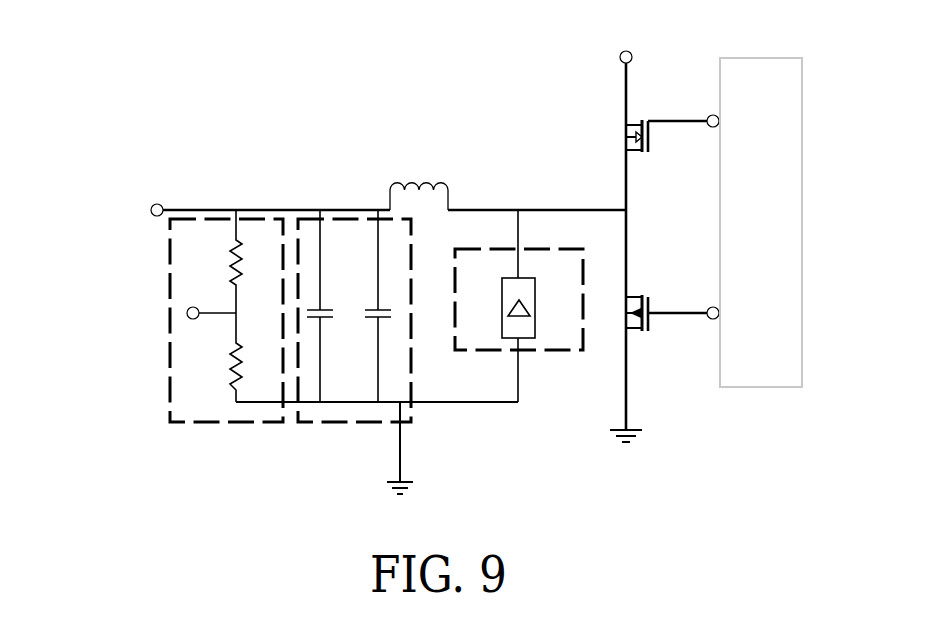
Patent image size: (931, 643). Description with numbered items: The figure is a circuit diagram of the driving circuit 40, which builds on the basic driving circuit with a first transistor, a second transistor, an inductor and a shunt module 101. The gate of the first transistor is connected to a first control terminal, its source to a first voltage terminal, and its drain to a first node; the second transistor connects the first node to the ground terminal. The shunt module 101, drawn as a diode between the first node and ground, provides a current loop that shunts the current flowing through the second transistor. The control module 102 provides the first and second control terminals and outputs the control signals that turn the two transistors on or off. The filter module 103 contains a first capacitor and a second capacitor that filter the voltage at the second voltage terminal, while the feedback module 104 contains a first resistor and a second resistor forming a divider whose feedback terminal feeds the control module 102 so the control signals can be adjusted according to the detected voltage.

The driving circuit 40 is at (53, 85).
The shunt module 101 is at (563, 350).
The control module 102 is at (803, 362).
The filter module 103 is at (333, 422).
The feedback module 104 is at (170, 347).